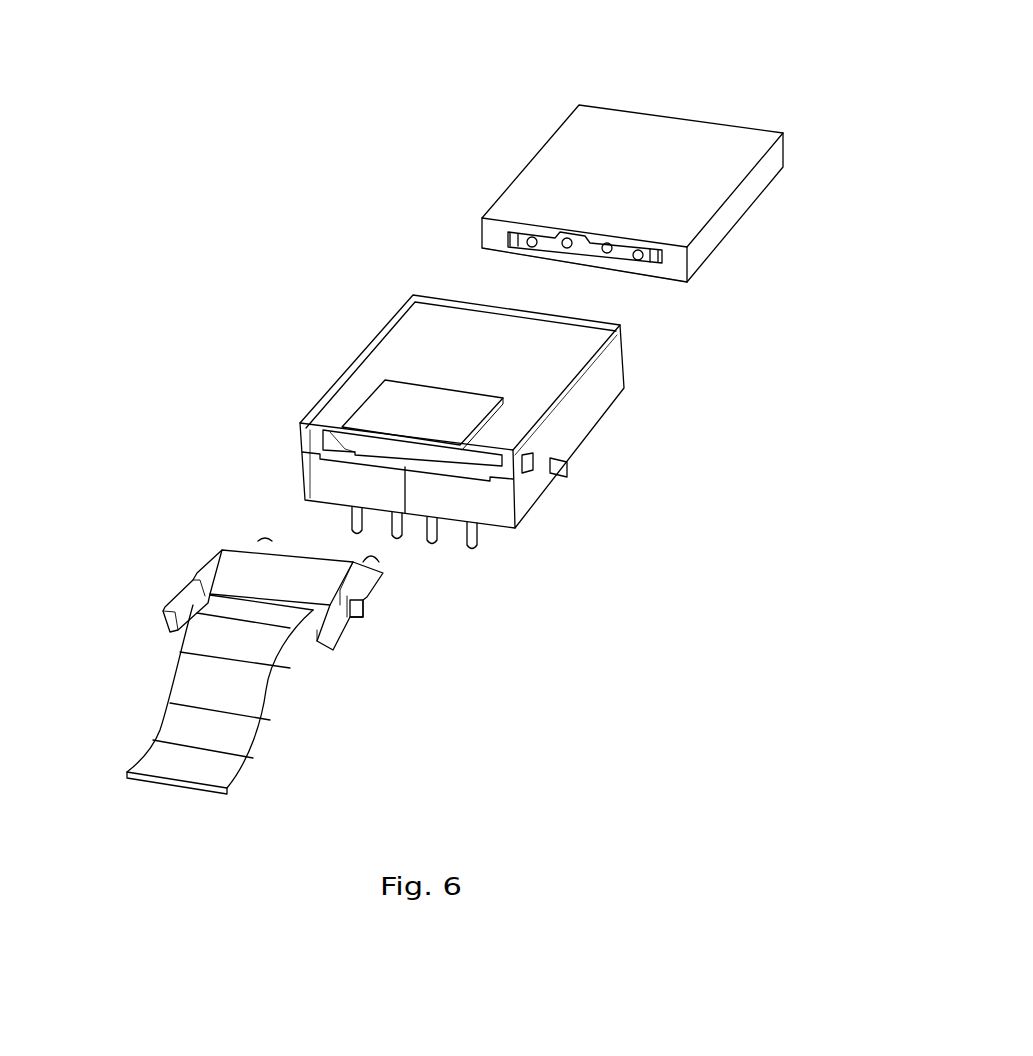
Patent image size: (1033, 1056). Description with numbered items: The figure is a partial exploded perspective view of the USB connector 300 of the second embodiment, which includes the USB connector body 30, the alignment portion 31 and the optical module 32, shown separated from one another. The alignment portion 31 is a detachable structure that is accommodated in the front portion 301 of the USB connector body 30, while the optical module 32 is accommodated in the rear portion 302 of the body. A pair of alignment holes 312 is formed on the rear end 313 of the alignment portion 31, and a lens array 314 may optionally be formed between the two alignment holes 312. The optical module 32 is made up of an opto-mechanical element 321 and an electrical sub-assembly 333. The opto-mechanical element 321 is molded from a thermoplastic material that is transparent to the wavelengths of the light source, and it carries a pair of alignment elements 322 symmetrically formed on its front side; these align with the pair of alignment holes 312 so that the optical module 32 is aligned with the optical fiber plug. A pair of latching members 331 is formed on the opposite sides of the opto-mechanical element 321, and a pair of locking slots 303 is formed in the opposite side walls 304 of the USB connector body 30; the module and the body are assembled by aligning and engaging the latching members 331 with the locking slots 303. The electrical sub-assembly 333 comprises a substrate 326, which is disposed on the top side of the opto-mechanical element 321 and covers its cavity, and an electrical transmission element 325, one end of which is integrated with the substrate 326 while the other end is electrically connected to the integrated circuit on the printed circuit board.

The USB connector 300 is at (88, 20).
The alignment portion 31 is at (502, 152).
The USB connector body 30 is at (323, 352).
The optical module 32 is at (178, 563).
The alignment holes 312 is at (527, 242).
The rear end 313 is at (670, 257).
The lens array 314 is at (608, 252).
The front portion 301 is at (630, 382).
The rear portion 302 is at (457, 465).
The locking slots 303 is at (533, 468).
The side walls 304 is at (572, 422).
The opto-mechanical element 321 is at (360, 583).
The alignment elements 322 is at (370, 563).
The electrical transmission element 325 is at (253, 658).
The substrate 326 is at (297, 590).
The latching members 331 is at (365, 618).
The electrical sub-assembly 333 is at (260, 572).